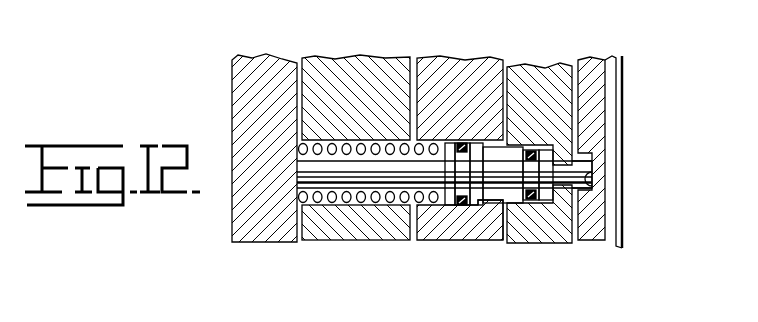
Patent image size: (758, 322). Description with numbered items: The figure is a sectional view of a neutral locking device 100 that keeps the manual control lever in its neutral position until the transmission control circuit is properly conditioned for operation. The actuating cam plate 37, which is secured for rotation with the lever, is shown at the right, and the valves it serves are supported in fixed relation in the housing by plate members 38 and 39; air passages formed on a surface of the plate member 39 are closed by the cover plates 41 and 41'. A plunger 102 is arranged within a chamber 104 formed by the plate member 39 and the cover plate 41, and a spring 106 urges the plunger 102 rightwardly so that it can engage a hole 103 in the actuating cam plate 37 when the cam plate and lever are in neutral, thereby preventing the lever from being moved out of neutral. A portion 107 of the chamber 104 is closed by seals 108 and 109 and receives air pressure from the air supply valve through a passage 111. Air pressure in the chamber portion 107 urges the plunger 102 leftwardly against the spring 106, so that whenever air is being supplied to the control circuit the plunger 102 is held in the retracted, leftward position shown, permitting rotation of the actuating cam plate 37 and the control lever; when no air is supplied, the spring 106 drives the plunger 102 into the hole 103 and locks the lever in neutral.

The actuating cam plate 37 is at (610, 74).
The plate member 38 is at (543, 230).
The plate member 39 is at (445, 230).
The cover plate 41 is at (355, 183).
The cover plate 41' is at (264, 182).
The neutral locking device 100 is at (349, 131).
The plunger 102 is at (593, 167).
The hole 103 is at (594, 186).
The chamber 104 is at (360, 205).
The spring 106 is at (318, 144).
The portion of the chamber 107 is at (490, 202).
The seal 108 is at (463, 142).
The seal 109 is at (534, 150).
The passage 111 is at (505, 142).